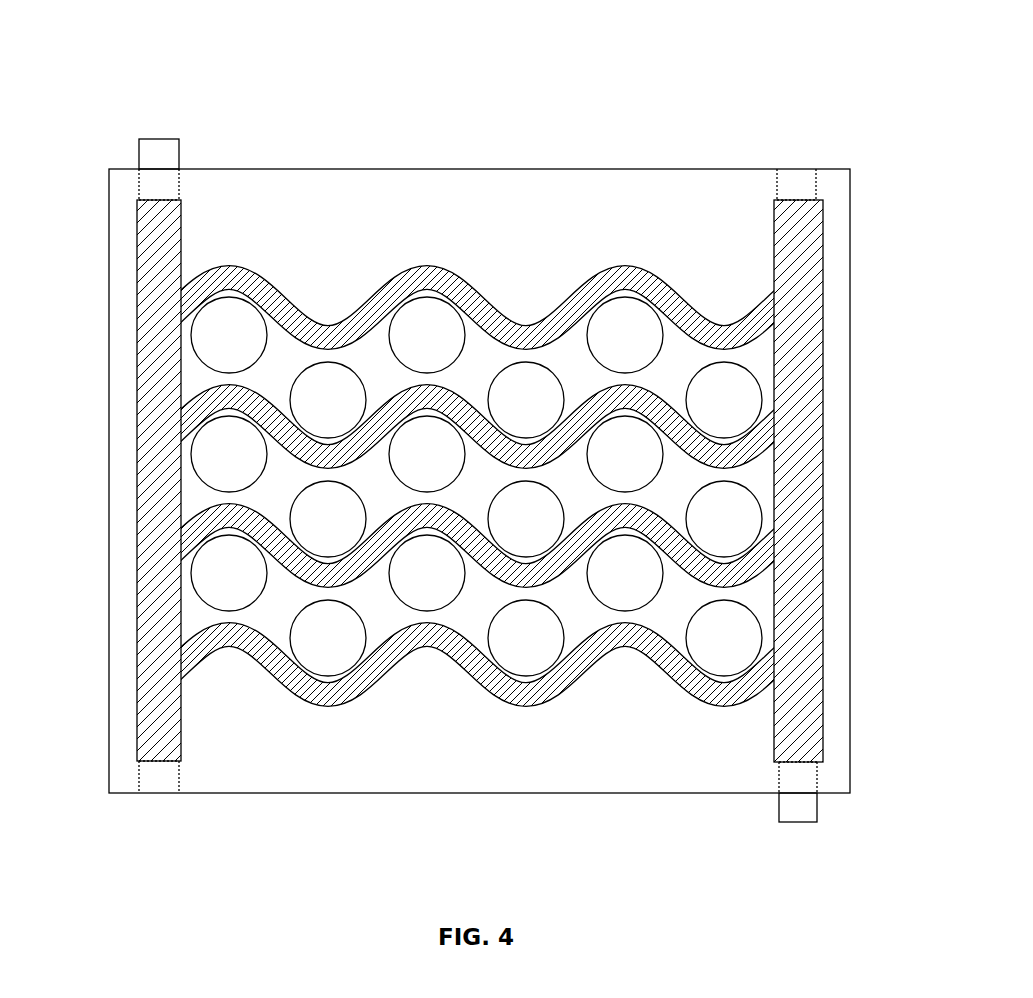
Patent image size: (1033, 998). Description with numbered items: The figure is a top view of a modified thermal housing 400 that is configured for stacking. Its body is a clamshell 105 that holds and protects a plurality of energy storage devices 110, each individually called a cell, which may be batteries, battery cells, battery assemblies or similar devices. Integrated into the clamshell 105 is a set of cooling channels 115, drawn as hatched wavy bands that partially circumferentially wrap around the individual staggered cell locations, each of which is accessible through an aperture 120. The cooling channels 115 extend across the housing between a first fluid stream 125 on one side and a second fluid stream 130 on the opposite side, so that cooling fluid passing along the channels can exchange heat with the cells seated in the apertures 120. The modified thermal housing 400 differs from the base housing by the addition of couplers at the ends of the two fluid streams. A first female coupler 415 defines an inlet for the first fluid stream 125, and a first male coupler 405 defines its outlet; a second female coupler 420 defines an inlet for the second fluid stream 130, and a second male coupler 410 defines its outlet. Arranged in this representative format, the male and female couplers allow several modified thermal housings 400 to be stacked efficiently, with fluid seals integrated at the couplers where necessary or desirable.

The modified thermal housing 400 is at (790, 55).
The clamshell 105 is at (448, 169).
The energy storage devices 110 is at (302, 243).
The cooling channels 115 is at (470, 407).
The aperture 120 is at (214, 345).
The first fluid stream 125 is at (181, 728).
The second fluid stream 130 is at (774, 260).
The first male coupler 405 is at (179, 155).
The second male coupler 410 is at (779, 802).
The first female coupler 415 is at (797, 187).
The second female coupler 420 is at (162, 780).